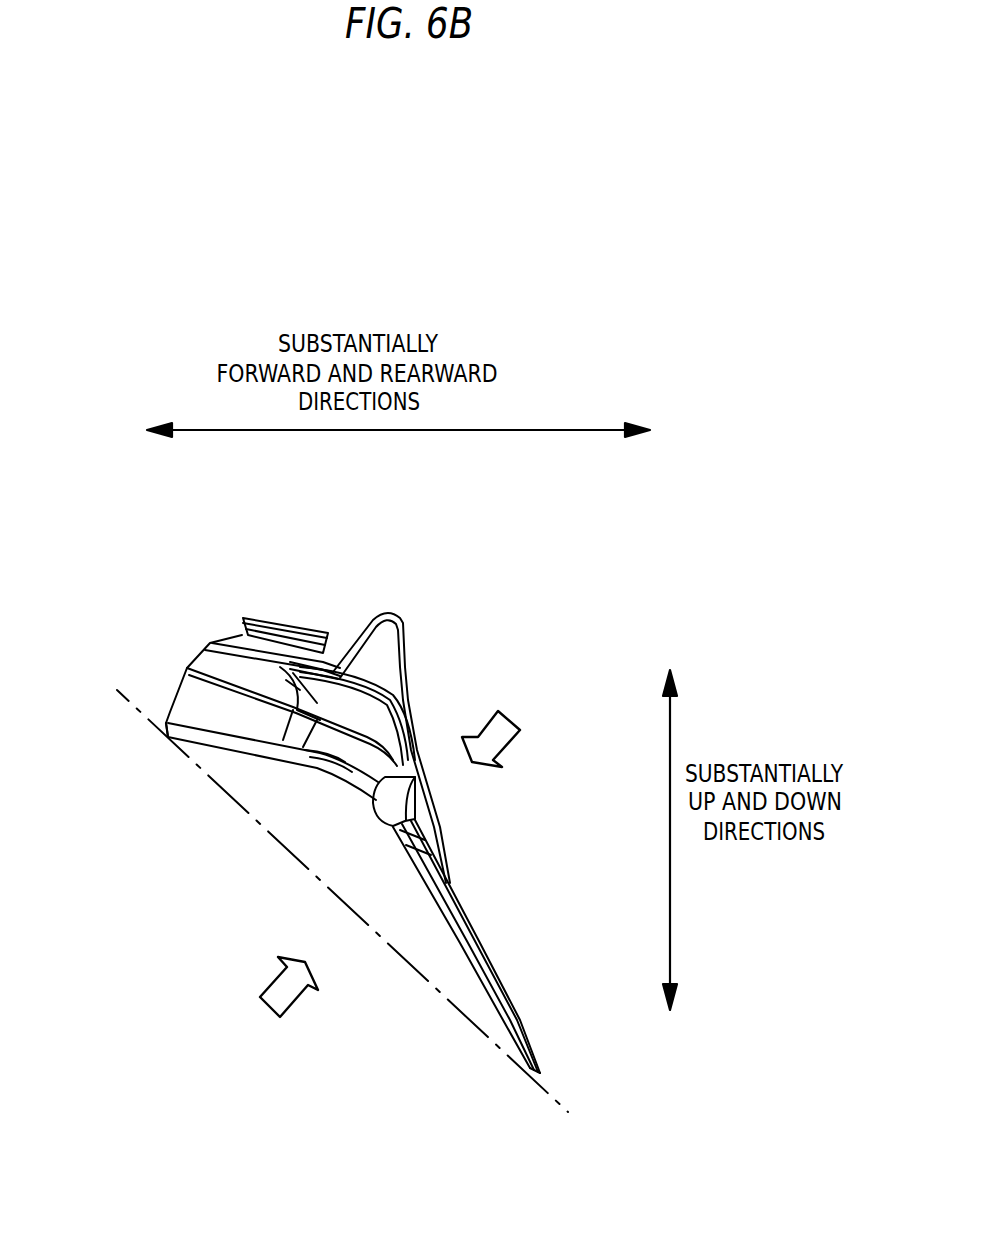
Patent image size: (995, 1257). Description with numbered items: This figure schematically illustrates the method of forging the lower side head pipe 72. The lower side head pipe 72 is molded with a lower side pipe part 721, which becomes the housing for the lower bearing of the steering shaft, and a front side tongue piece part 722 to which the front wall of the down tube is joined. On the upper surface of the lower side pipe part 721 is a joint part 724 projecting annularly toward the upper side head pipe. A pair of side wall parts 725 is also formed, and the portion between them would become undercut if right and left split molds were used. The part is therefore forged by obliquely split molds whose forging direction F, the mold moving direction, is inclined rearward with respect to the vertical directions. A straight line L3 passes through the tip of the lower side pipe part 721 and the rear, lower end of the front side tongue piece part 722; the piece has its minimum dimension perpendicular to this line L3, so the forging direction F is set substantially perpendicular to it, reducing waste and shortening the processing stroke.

The lower side head pipe 72 is at (165, 522).
The lower side pipe part 721 is at (298, 745).
The front side tongue piece part 722 is at (480, 943).
The joint part 724 is at (282, 627).
The side wall part 725 is at (393, 615).
The straight line L3 is at (250, 820).
The forging direction F is at (520, 730).